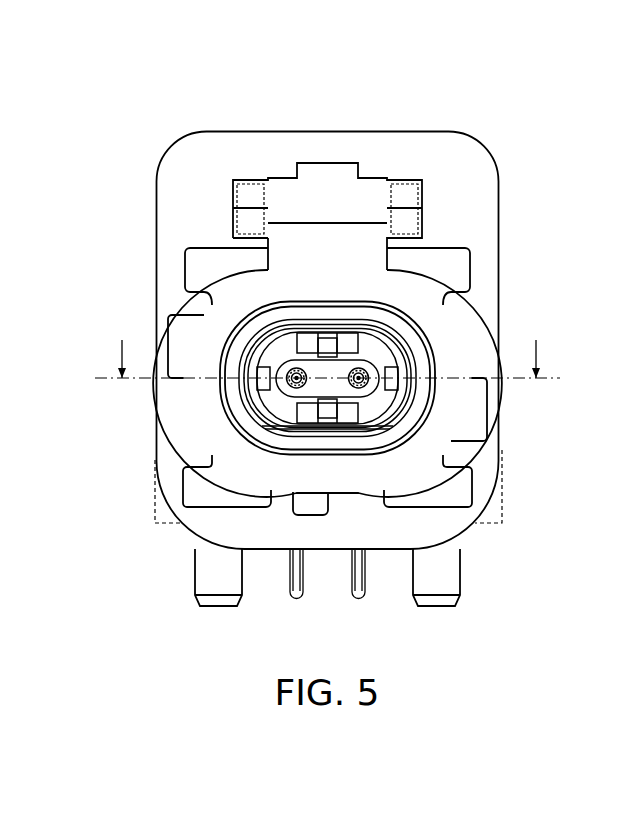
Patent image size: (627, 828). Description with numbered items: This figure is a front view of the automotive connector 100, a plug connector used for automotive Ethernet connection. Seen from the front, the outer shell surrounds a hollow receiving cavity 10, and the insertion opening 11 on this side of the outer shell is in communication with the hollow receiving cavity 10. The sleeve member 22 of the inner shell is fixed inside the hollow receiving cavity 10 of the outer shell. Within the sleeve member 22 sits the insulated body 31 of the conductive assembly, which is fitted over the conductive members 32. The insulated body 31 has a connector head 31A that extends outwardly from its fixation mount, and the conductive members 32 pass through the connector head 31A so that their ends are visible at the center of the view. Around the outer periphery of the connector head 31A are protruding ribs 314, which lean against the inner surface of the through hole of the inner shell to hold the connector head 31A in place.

The automotive connector 100 is at (303, 48).
The hollow receiving cavity 10 is at (430, 270).
The insertion opening 11 is at (182, 322).
The sleeve member 22 is at (250, 395).
The insulated body 31 is at (240, 394).
The connector head 31A is at (333, 388).
The protruding ribs 314 is at (350, 393).
The conductive members 32 is at (362, 372).